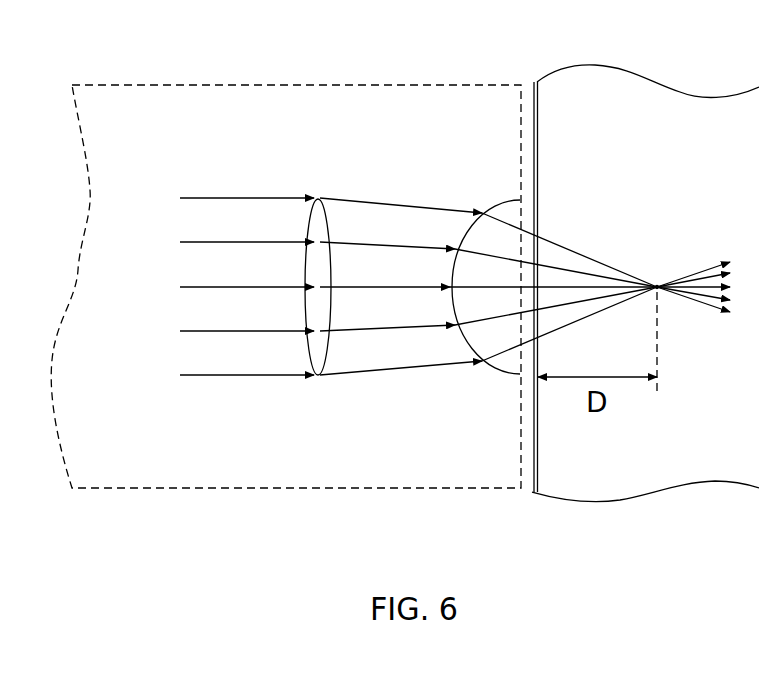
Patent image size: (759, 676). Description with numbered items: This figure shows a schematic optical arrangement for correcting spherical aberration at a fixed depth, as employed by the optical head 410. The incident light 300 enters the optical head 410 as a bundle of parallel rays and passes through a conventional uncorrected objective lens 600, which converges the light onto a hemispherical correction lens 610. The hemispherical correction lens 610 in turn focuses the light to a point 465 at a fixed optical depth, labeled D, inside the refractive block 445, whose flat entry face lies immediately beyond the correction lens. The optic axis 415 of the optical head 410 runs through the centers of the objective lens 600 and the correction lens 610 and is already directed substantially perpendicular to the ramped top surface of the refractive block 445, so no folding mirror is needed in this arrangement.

The incident light 300 is at (186, 197).
The optical head 410 is at (388, 84).
The optic axis 415 is at (382, 287).
The refractive block 445 is at (652, 80).
The focal point 465 is at (658, 284).
The conventional uncorrected objective lens 600 is at (314, 197).
The hemispherical correction lens 610 is at (506, 200).